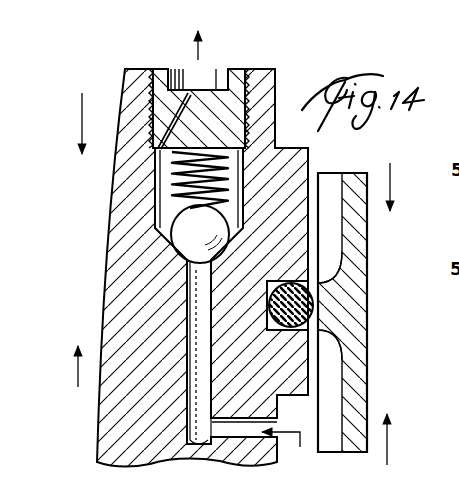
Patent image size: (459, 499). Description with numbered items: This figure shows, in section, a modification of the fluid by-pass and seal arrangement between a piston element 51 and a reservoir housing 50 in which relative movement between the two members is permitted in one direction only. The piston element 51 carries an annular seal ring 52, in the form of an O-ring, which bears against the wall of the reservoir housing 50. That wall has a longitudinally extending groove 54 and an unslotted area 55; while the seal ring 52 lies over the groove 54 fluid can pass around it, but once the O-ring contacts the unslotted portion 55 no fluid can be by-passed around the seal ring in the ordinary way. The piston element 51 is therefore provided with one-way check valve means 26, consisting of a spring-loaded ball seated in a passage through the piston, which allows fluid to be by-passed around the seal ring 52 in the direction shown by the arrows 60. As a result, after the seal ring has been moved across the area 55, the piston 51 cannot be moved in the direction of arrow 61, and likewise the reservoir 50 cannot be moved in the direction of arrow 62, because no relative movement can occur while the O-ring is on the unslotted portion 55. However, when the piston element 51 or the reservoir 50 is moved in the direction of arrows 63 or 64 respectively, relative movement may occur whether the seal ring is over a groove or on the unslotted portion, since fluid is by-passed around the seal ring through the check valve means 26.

The one-way check valve means 26 is at (166, 204).
The reservoir housing 50 is at (362, 269).
The piston element 51 is at (108, 318).
The seal ring 52 is at (315, 310).
The longitudinally extending groove 54 is at (331, 234).
The unslotted area 55 is at (318, 292).
The arrows indicating direction of fluid flow 60 is at (205, 48).
The arrow indicating piston movement direction 61 is at (75, 368).
The arrow indicating reservoir movement direction 62 is at (392, 186).
The arrow indicating permitted piston movement direction 63 is at (78, 112).
The arrow indicating permitted reservoir movement direction 64 is at (390, 447).